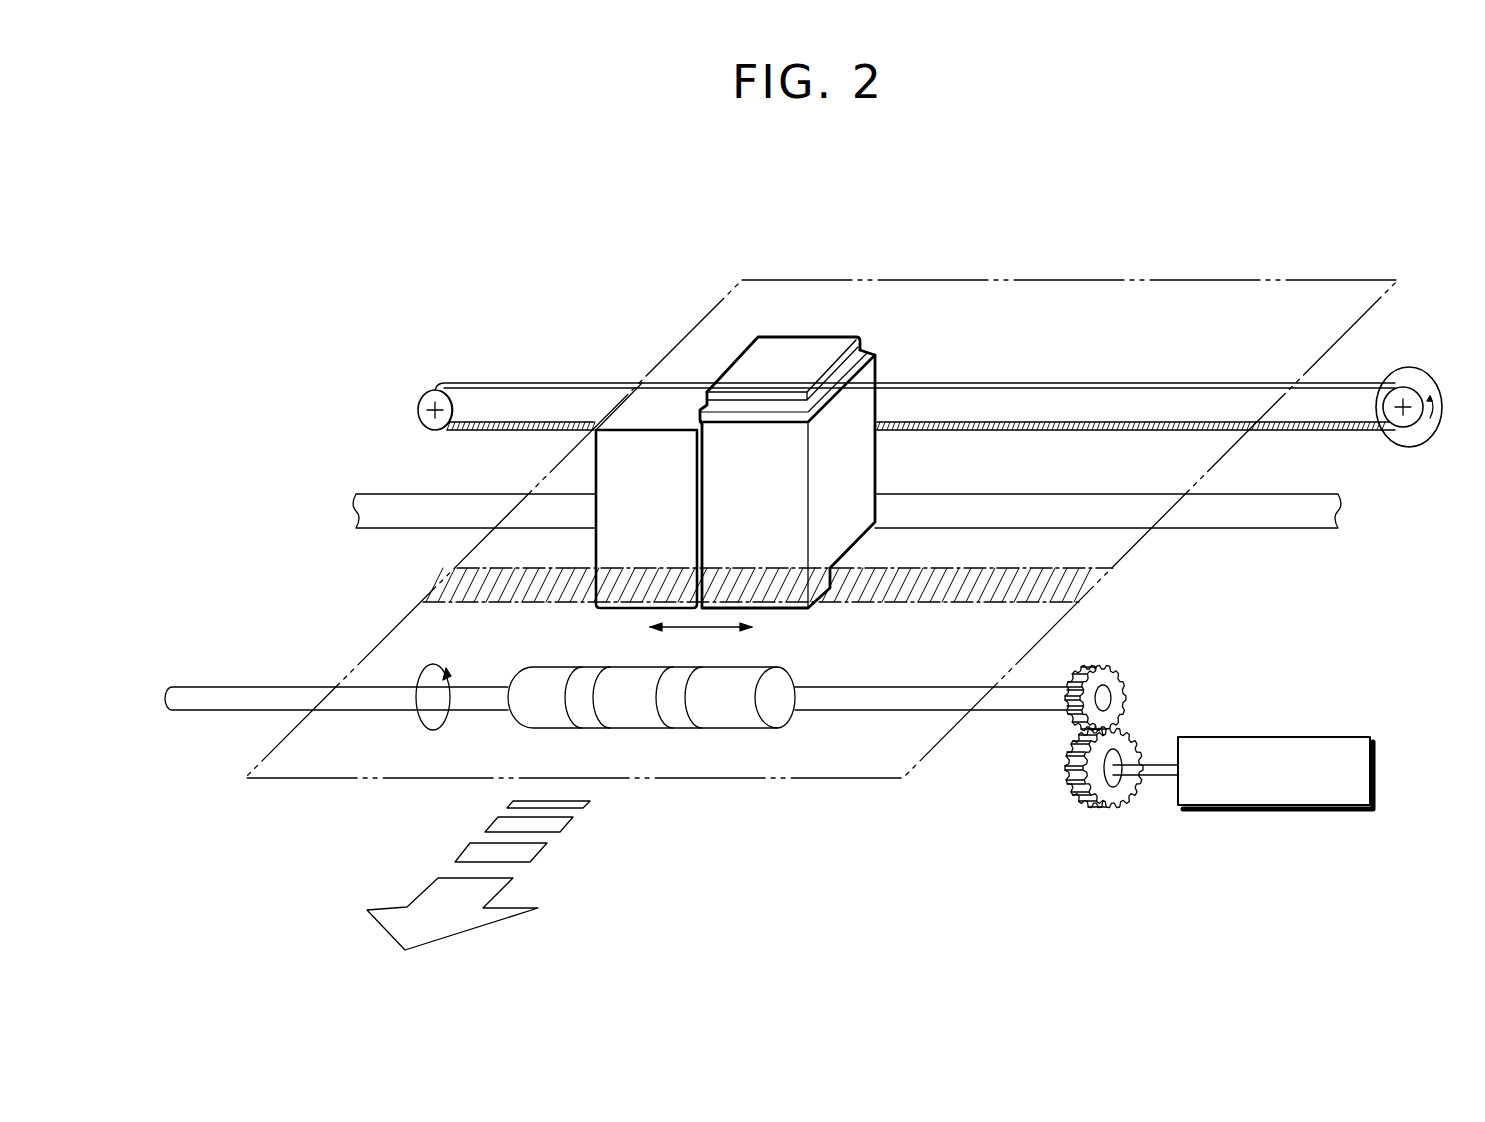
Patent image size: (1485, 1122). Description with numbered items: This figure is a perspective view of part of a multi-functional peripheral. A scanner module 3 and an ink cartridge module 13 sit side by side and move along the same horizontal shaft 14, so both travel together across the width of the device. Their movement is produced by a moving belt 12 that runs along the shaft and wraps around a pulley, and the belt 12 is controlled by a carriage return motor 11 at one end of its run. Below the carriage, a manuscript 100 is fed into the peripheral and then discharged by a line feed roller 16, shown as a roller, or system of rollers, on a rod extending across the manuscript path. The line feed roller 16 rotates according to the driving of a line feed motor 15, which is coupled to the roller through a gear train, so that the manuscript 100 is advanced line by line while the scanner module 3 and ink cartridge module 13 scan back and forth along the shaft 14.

The scanner module 3 is at (674, 398).
The carriage return motor 11 is at (1420, 385).
The moving belt 12 is at (1012, 385).
The ink cartridge module 13 is at (795, 335).
The horizontal shaft 14 is at (1225, 530).
The line feed motor 15 is at (1307, 737).
The line feed roller 16 is at (728, 708).
The manuscript 100 is at (867, 757).